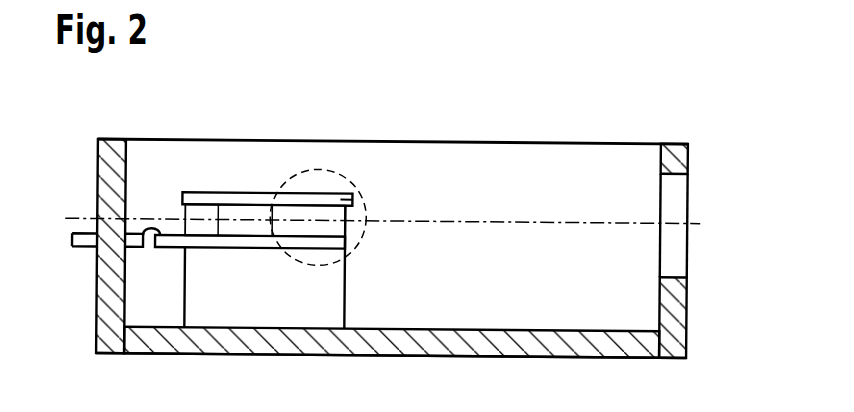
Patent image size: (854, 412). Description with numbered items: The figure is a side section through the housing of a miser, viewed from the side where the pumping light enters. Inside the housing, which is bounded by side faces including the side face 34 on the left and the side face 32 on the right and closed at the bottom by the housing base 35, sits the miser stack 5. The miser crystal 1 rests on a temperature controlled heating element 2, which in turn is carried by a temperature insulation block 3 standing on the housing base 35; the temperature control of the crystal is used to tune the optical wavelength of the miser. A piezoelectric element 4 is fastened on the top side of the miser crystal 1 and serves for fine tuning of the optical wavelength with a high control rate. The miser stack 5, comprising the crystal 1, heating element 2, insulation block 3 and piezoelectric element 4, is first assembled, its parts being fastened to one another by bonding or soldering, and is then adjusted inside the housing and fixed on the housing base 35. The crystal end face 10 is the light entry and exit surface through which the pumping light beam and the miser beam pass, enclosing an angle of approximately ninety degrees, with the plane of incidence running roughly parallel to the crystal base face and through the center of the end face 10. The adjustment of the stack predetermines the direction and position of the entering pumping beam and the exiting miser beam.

The miser crystal 1 is at (193, 215).
The temperature controlled heating element 2 is at (333, 243).
The temperature insulation block 3 is at (338, 300).
The piezoelectric element 4 is at (358, 197).
The miser stack 5 is at (288, 194).
The crystal end face 10 is at (338, 219).
The side face of the housing 32 is at (676, 328).
The side face of the housing 34 is at (108, 180).
The housing base 35 is at (518, 330).